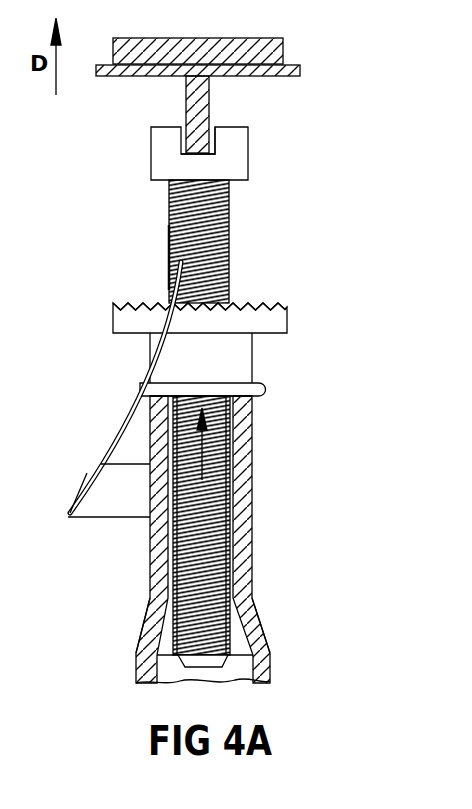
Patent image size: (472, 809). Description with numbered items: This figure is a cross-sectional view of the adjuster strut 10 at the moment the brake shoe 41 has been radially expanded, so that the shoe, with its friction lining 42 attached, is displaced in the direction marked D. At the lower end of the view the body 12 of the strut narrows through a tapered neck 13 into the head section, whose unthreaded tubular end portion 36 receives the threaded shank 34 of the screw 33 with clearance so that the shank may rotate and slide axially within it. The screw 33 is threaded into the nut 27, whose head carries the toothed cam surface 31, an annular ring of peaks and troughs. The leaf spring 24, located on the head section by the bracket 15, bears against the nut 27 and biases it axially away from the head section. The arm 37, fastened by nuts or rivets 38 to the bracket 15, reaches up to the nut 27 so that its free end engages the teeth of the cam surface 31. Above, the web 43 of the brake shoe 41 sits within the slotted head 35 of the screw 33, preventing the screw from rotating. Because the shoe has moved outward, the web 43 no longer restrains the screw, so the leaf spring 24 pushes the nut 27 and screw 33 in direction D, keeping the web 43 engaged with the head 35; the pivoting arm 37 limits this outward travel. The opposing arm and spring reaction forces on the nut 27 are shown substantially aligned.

The adjuster strut 10 is at (320, 432).
The body 12 is at (273, 670).
The tapered neck 13 is at (265, 628).
The bracket 15 is at (118, 517).
The leaf spring 24 is at (266, 393).
The nut 27 is at (265, 320).
The cam surface 31 is at (247, 302).
The screw 33 is at (151, 151).
The threaded shank 34 is at (198, 215).
The slotted head 35 is at (248, 155).
The tubular end portion 36 is at (253, 530).
The arm 37 is at (122, 420).
The nuts or rivets 38 is at (87, 473).
The brake shoe 41 is at (290, 73).
The friction lining 42 is at (262, 50).
The web 43 is at (197, 107).